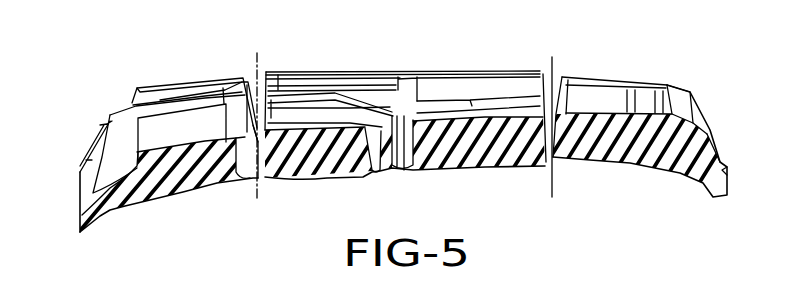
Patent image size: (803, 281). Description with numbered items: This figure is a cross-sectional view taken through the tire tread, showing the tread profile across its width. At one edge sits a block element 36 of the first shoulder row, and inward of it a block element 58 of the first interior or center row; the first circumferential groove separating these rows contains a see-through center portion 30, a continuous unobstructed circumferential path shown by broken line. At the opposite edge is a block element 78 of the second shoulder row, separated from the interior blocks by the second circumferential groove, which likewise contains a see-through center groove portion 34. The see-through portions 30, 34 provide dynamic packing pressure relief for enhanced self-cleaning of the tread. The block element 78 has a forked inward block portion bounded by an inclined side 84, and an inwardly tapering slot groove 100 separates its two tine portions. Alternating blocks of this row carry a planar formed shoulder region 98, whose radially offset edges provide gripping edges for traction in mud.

The see-through center portion 30 is at (557, 183).
The see-through center groove portion 34 is at (250, 194).
The block element 36 is at (598, 85).
The block element 58 is at (484, 88).
The block element 78 is at (170, 103).
The inclined side 84 is at (173, 128).
The planar formed shoulder region 98 is at (98, 160).
The inwardly tapering slot groove 100 is at (213, 105).